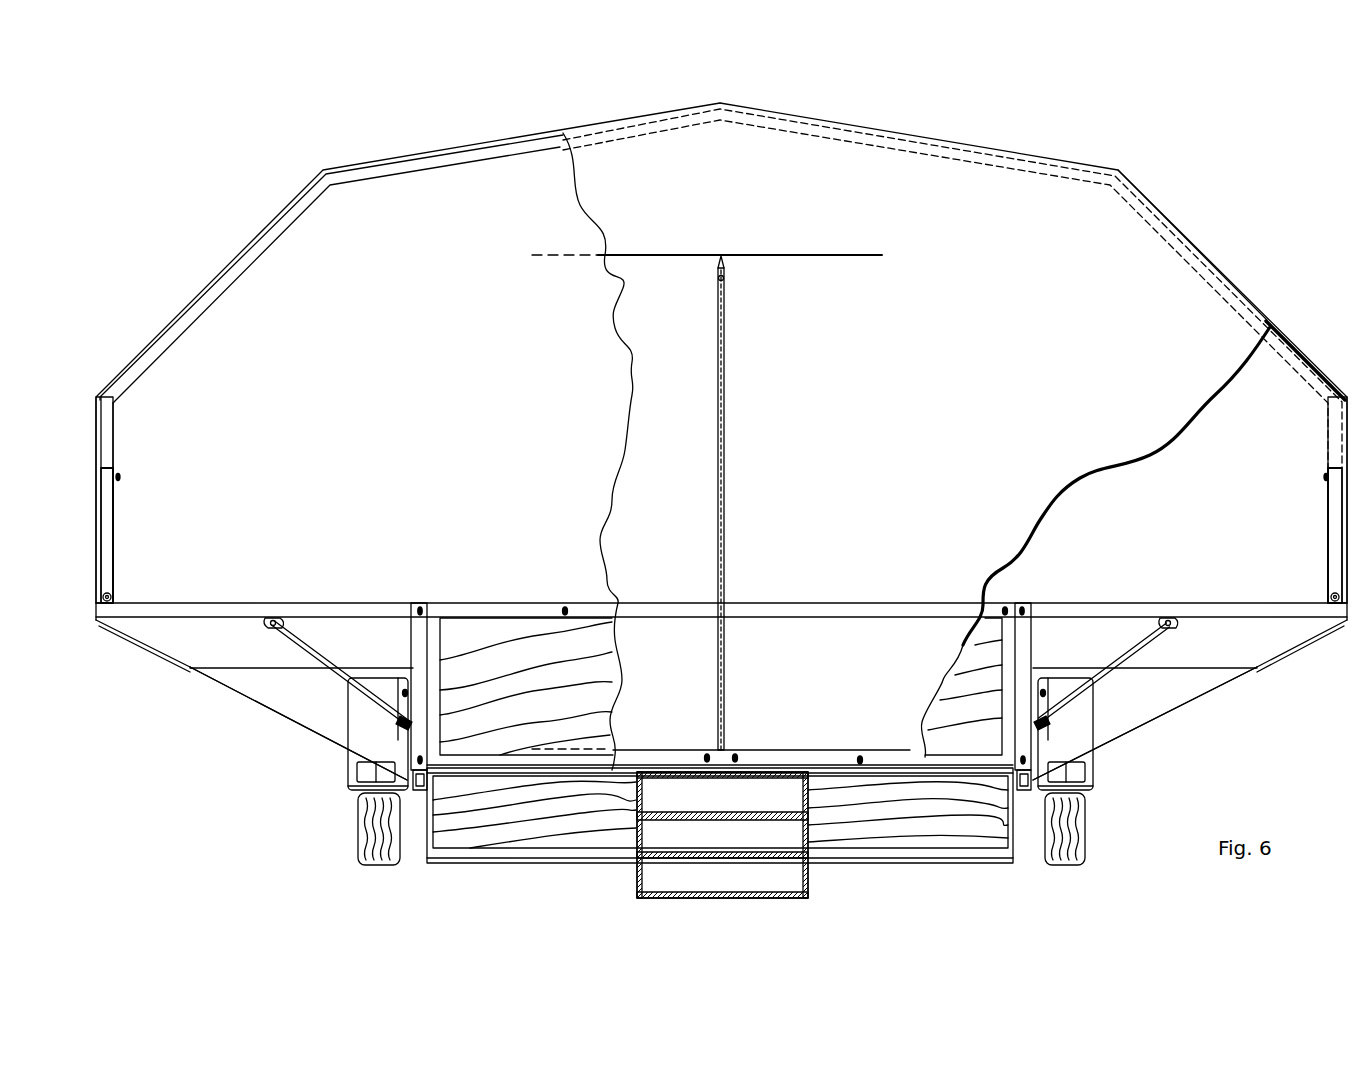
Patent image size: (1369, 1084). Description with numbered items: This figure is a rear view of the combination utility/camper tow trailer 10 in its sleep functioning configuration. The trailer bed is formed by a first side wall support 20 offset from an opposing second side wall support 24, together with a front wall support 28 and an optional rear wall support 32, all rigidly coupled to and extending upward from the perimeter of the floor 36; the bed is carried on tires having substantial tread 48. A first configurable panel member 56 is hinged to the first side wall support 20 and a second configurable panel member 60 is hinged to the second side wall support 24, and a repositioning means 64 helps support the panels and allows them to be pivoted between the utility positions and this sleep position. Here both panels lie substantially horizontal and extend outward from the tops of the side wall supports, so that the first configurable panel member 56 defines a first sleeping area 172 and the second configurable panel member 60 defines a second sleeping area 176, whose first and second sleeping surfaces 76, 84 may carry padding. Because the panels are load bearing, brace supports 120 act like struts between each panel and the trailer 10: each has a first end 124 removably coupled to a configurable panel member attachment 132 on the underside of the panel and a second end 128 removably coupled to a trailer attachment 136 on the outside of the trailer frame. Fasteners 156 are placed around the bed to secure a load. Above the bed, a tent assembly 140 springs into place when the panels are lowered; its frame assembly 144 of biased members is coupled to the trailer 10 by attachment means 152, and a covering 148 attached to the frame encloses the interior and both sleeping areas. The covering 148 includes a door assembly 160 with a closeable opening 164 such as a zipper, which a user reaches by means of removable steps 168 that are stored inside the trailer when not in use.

The utility/camper tow trailer 10 is at (1195, 211).
The first side wall support 20 is at (463, 617).
The second side wall support 24 is at (1023, 637).
The front wall support 28 is at (526, 686).
The rear wall support 32 is at (490, 840).
The floor 36 is at (797, 765).
The tread 48 is at (363, 847).
The first configurable panel member 56 is at (142, 603).
The second configurable panel member 60 is at (1298, 610).
The repositioning means 64 is at (410, 603).
The first sleeping surface 76 is at (250, 603).
The second sleeping surface 84 is at (1255, 603).
The brace support 120 is at (330, 666).
The first end 124 is at (310, 645).
The second end 128 is at (405, 690).
The configurable panel member attachment 132 is at (267, 627).
The trailer attachment 136 is at (397, 727).
The tent assembly 140 is at (1232, 272).
The frame assembly 144 is at (1277, 340).
The covering 148 is at (1250, 736).
The attachment means 152 is at (130, 498).
The fastener 156 is at (424, 609).
The door assembly 160 is at (865, 255).
The closeable opening 164 is at (725, 358).
The steps 168 is at (633, 877).
The first sleeping area 172 is at (313, 582).
The second sleeping area 176 is at (1217, 575).